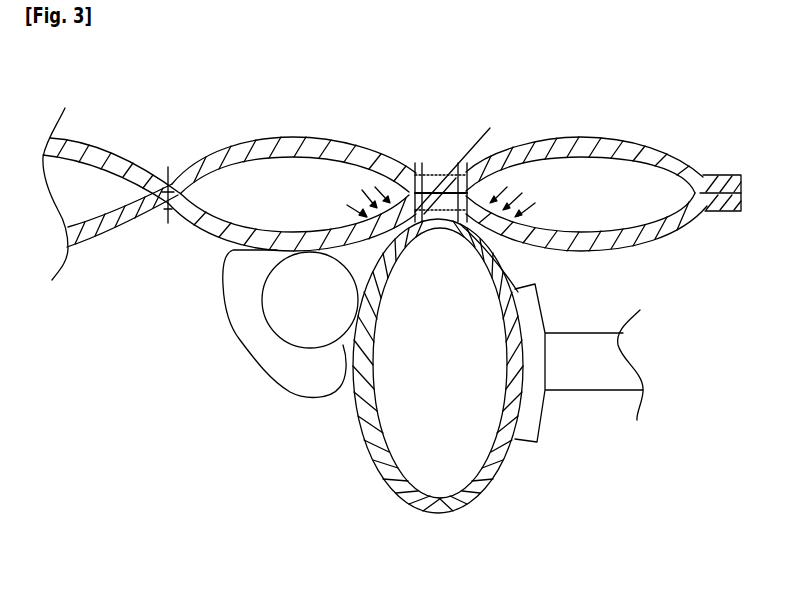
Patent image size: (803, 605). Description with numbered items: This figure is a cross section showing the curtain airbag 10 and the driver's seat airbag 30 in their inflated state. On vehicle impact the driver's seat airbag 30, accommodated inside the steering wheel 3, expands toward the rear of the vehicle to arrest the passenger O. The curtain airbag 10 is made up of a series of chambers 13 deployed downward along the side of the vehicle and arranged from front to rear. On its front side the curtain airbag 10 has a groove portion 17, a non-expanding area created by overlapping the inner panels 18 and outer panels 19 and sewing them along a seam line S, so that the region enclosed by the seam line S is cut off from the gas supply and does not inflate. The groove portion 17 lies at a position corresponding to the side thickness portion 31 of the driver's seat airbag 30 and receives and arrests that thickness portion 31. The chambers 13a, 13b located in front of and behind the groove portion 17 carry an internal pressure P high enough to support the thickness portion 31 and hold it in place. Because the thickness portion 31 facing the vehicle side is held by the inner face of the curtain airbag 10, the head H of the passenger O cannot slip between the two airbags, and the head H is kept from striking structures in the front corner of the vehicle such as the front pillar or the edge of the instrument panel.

The chamber 13 is at (92, 167).
The curtain airbag 10 is at (193, 160).
The chamber 13b is at (293, 163).
The groove portion 17 is at (439, 173).
The seam line S is at (490, 128).
The chamber 13a is at (565, 167).
The inner panel 18 is at (640, 245).
The outer panel 19 is at (664, 148).
The internal pressure P is at (439, 203).
The head H is at (278, 315).
The passenger O is at (298, 383).
The thickness portion 31 is at (448, 253).
The steering wheel 3 is at (533, 417).
The driver's seat airbag 30 is at (446, 475).